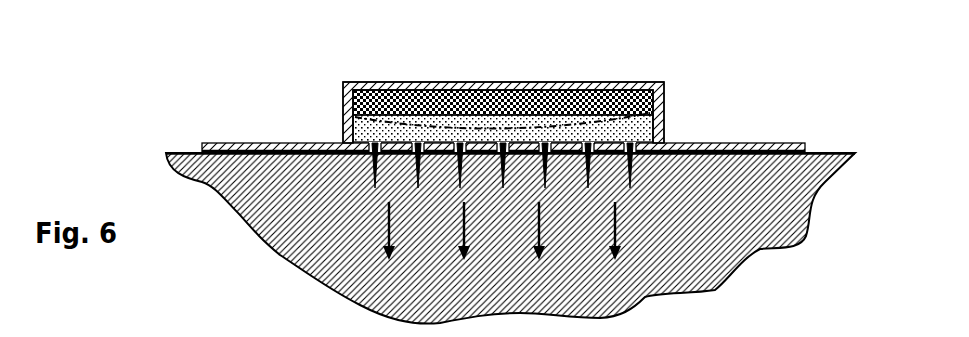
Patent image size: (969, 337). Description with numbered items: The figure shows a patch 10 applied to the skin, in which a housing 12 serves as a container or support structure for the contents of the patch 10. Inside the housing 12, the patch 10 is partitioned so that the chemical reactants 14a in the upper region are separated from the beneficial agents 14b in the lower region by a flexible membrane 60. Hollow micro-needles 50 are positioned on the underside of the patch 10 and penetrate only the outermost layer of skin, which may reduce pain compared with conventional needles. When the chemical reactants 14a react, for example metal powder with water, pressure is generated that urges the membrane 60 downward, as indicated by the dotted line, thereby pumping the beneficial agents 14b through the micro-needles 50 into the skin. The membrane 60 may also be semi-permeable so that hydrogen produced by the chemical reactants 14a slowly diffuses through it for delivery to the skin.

The patch 10 is at (354, 54).
The housing 12 is at (622, 84).
The chemical reactants 14a is at (645, 103).
The beneficial agents 14b is at (645, 129).
The micro-needles 50 is at (582, 168).
The flexible membrane 60 is at (400, 119).